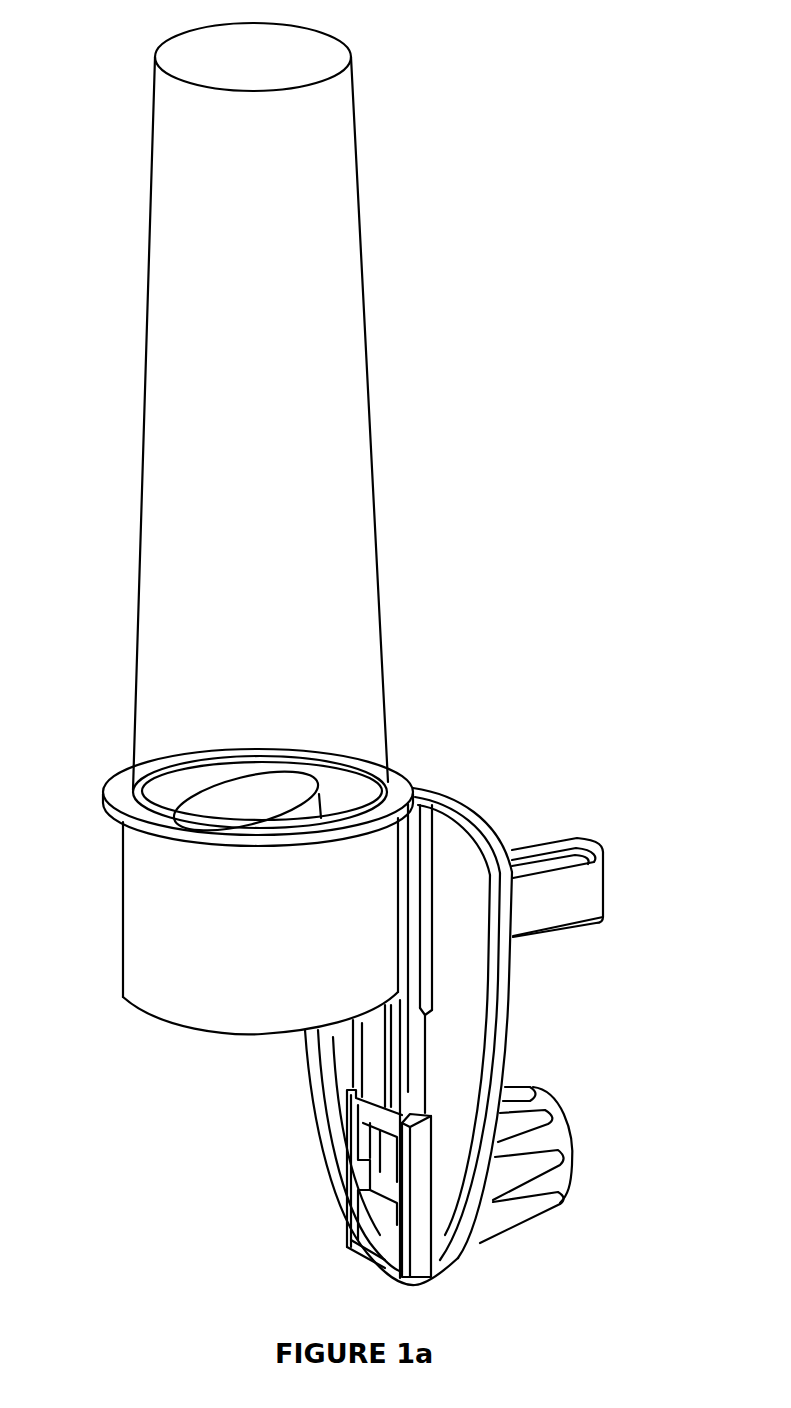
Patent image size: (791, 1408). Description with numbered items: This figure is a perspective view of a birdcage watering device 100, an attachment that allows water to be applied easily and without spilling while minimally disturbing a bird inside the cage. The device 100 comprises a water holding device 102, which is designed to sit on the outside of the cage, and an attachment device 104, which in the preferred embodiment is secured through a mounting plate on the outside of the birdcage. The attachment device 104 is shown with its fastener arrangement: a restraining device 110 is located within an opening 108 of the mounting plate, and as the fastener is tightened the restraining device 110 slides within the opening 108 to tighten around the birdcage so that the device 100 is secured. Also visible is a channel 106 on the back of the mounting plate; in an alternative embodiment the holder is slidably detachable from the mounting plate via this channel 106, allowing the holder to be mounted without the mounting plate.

The birdcage watering device 100 is at (540, 162).
The water holding device 102 is at (128, 504).
The attachment device 104 is at (531, 826).
The channel 106 is at (360, 1076).
The opening 108 is at (422, 1283).
The restraining device 110 is at (378, 1200).